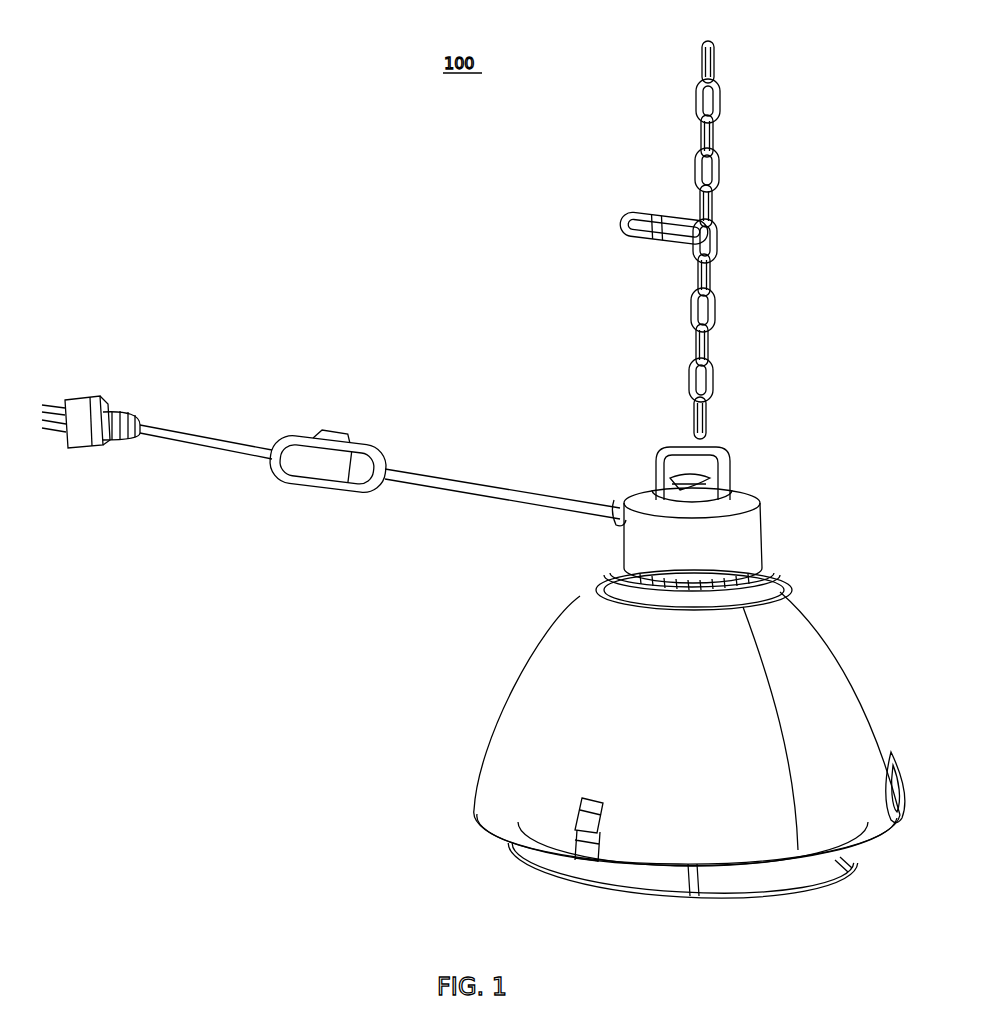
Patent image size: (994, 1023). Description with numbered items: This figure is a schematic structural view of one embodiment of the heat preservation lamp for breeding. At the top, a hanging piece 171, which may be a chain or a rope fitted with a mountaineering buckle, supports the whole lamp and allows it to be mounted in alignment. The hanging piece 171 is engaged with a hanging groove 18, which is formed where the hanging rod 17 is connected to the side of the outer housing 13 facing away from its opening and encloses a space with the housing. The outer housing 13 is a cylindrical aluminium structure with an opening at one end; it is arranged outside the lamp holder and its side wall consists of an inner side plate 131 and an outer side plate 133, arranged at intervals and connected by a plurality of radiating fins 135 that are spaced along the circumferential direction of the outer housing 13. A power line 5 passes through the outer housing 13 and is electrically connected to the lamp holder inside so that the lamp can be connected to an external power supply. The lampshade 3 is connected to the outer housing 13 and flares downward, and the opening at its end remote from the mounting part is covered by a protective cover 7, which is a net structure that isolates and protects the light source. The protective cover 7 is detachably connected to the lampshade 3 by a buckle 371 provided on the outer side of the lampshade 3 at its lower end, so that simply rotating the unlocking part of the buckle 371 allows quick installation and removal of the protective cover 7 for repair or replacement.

The hanging piece 171 is at (694, 342).
The hanging rod 17 is at (660, 456).
The hanging groove 18 is at (664, 480).
The outer housing 13 is at (680, 549).
The outer side plate 133 is at (620, 541).
The radiating fins 135 is at (626, 578).
The inner side plate 131 is at (600, 594).
The lampshade 3 is at (507, 692).
The protective cover 7 is at (664, 896).
The buckle 371 is at (583, 862).
The power line 5 is at (231, 450).